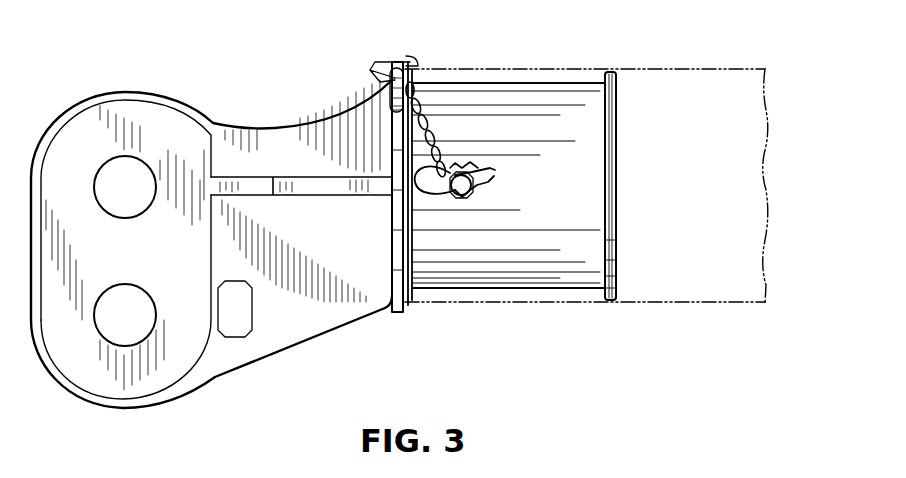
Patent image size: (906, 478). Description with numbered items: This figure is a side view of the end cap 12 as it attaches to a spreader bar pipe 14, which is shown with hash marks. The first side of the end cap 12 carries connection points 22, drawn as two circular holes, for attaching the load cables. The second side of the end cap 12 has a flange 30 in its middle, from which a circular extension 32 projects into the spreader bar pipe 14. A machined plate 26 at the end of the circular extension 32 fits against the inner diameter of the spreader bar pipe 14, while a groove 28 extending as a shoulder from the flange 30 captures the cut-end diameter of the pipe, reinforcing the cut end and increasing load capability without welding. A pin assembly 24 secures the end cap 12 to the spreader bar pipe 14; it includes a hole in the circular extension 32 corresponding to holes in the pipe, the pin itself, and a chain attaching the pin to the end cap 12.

The end cap 12 is at (66, 82).
The spreader bar pipe 14 is at (572, 69).
The connection points 22 is at (152, 314).
The pin assembly 24 is at (486, 197).
The machined plate 26 is at (616, 186).
The groove 28 is at (405, 310).
The flange 30 is at (394, 312).
The circular extension 32 is at (505, 80).